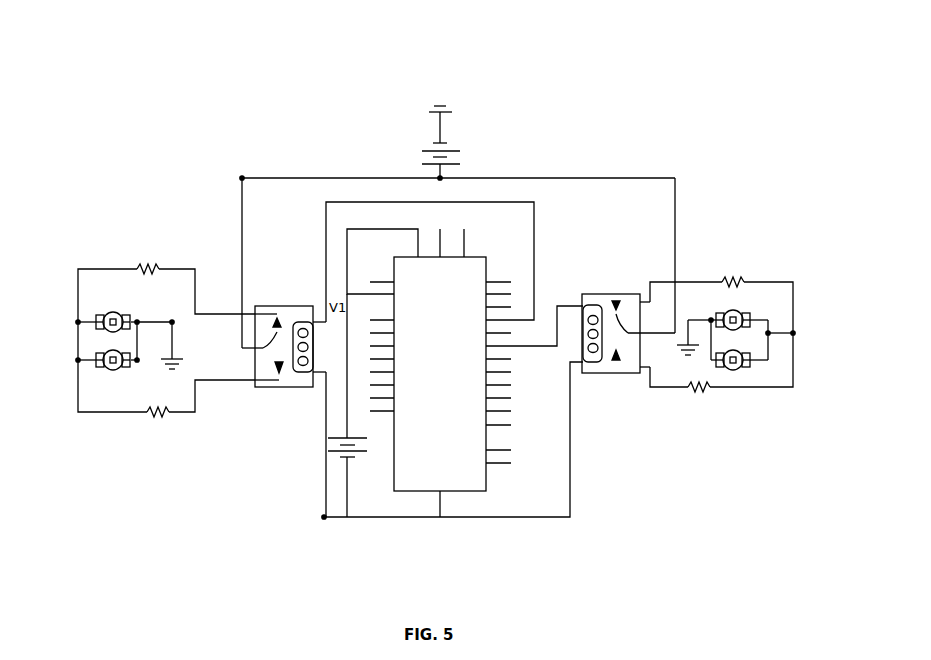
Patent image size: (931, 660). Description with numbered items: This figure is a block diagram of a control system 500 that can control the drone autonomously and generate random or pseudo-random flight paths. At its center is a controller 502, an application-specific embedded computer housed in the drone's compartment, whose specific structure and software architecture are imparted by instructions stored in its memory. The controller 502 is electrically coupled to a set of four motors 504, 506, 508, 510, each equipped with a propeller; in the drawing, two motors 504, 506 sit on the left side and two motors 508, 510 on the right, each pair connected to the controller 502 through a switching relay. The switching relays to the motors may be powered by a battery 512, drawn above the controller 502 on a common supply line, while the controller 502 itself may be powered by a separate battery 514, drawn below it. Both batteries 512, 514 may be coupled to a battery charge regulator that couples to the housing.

The control system 500 is at (420, 66).
The controller 502 is at (457, 487).
The motor 504 is at (113, 312).
The motor 506 is at (113, 370).
The motor 508 is at (737, 314).
The motor 510 is at (740, 367).
The battery 512 is at (467, 141).
The battery 514 is at (343, 462).